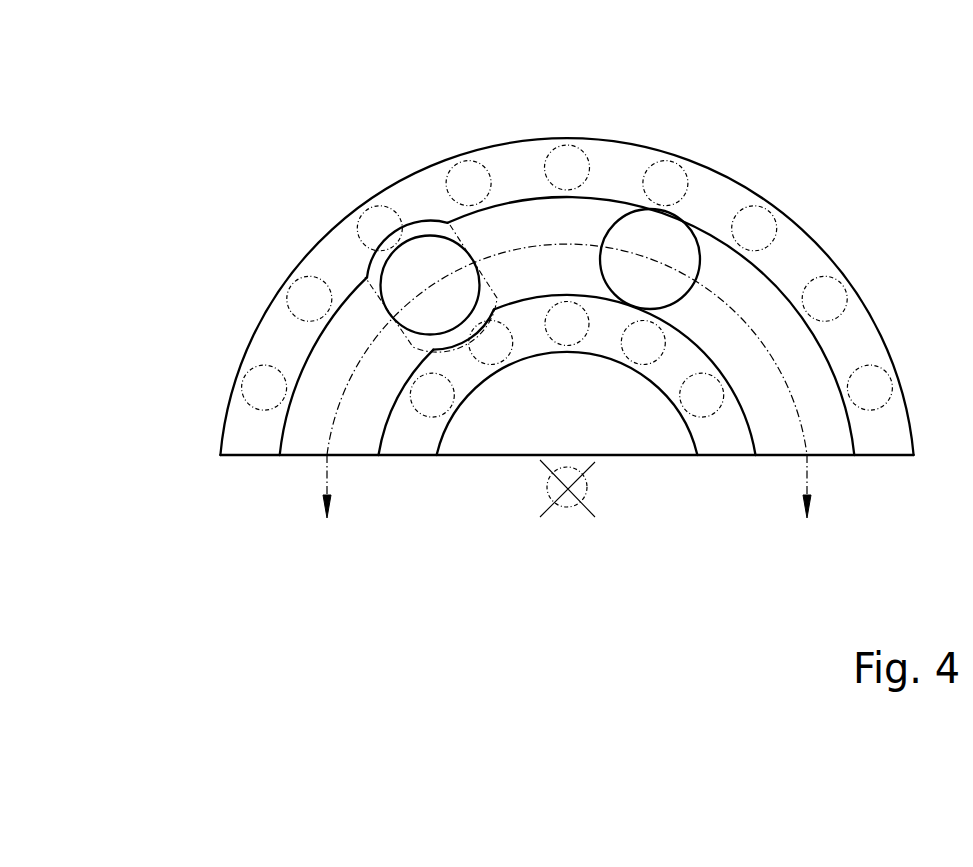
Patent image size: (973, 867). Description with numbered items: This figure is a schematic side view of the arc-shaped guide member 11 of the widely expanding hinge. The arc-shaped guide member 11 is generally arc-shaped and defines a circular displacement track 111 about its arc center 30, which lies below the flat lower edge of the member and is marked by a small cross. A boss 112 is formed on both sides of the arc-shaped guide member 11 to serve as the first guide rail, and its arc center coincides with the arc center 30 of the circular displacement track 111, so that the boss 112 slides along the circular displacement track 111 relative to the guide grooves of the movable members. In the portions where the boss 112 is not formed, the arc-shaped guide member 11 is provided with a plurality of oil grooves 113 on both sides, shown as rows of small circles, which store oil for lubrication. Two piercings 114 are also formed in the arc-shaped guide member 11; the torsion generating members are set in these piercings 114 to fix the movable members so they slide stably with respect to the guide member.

The arc-shaped guide member 11 is at (389, 166).
The circular displacement track 111 is at (808, 475).
The boss 112 is at (323, 362).
The oil grooves 113 is at (703, 395).
The piercings 114 is at (423, 257).
The arc center 30 is at (567, 494).